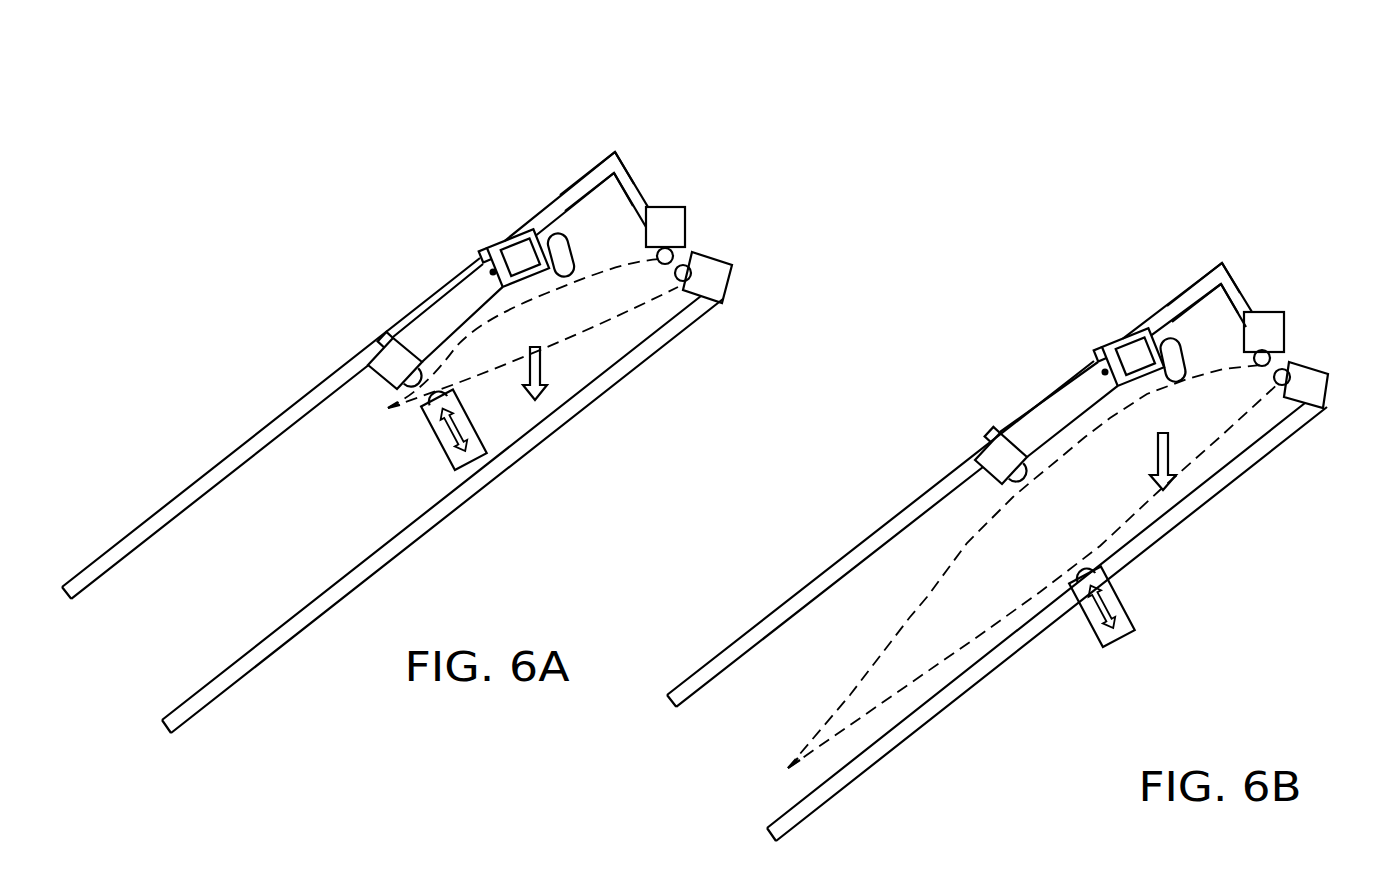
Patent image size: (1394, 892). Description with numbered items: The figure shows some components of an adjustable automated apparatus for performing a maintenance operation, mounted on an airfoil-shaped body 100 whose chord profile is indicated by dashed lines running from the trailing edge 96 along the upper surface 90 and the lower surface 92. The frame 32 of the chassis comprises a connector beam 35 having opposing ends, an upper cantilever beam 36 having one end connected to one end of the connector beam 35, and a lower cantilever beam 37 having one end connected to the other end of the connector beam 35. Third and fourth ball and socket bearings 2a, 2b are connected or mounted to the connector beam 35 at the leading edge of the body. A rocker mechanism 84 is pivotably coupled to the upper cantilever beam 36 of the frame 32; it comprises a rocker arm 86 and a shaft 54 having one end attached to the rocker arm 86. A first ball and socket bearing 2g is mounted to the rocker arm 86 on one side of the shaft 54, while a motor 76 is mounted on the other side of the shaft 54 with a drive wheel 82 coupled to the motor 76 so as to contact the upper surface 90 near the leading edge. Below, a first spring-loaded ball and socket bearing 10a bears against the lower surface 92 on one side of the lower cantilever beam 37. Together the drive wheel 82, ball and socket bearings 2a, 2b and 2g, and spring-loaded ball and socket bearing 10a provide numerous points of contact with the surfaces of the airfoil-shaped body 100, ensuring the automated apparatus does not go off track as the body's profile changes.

In FIG. 6A, the third ball and socket bearing 2a is at (688, 220).
In FIG. 6B, the third ball and socket bearing 2a is at (1286, 322).
In FIG. 6A, the fourth ball and socket bearing 2b is at (730, 262).
In FIG. 6B, the fourth ball and socket bearing 2b is at (1330, 367).
In FIG. 6A, the first ball and socket bearing 2g is at (366, 356).
In FIG. 6B, the first ball and socket bearing 2g is at (973, 455).
In FIG. 6A, the first spring-loaded ball and socket bearing 10a is at (480, 470).
In FIG. 6B, the first spring-loaded ball and socket bearing 10a is at (1118, 652).
In FIG. 6A, the frame 32 is at (275, 410).
In FIG. 6B, the frame 32 is at (943, 472).
In FIG. 6A, the connector beam 35 is at (640, 183).
In FIG. 6B, the connector beam 35 is at (1242, 290).
In FIG. 6A, the upper cantilever beam 36 is at (552, 197).
In FIG. 6B, the upper cantilever beam 36 is at (1186, 290).
In FIG. 6A, the lower cantilever beam 37 is at (624, 379).
In FIG. 6B, the lower cantilever beam 37 is at (1196, 522).
In FIG. 6A, the shaft 54 is at (490, 271).
In FIG. 6B, the shaft 54 is at (1102, 372).
In FIG. 6A, the motor 76 is at (522, 228).
In FIG. 6B, the motor 76 is at (1138, 330).
In FIG. 6A, the drive wheel 82 is at (566, 234).
In FIG. 6B, the drive wheel 82 is at (1182, 355).
In FIG. 6A, the rocker mechanism 84 is at (478, 255).
In FIG. 6B, the rocker mechanism 84 is at (1090, 356).
In FIG. 6A, the rocker arm 86 is at (427, 316).
In FIG. 6B, the rocker arm 86 is at (1040, 407).
In FIG. 6A, the upper surface 90 is at (600, 262).
In FIG. 6B, the upper surface 90 is at (908, 620).
In FIG. 6A, the lower surface 92 is at (592, 325).
In FIG. 6B, the lower surface 92 is at (1212, 459).
In FIG. 6A, the trailing edge 96 is at (386, 413).
In FIG. 6B, the trailing edge 96 is at (780, 782).
In FIG. 6A, the airfoil-shaped body 100 is at (568, 345).
In FIG. 6B, the airfoil-shaped body 100 is at (1028, 610).